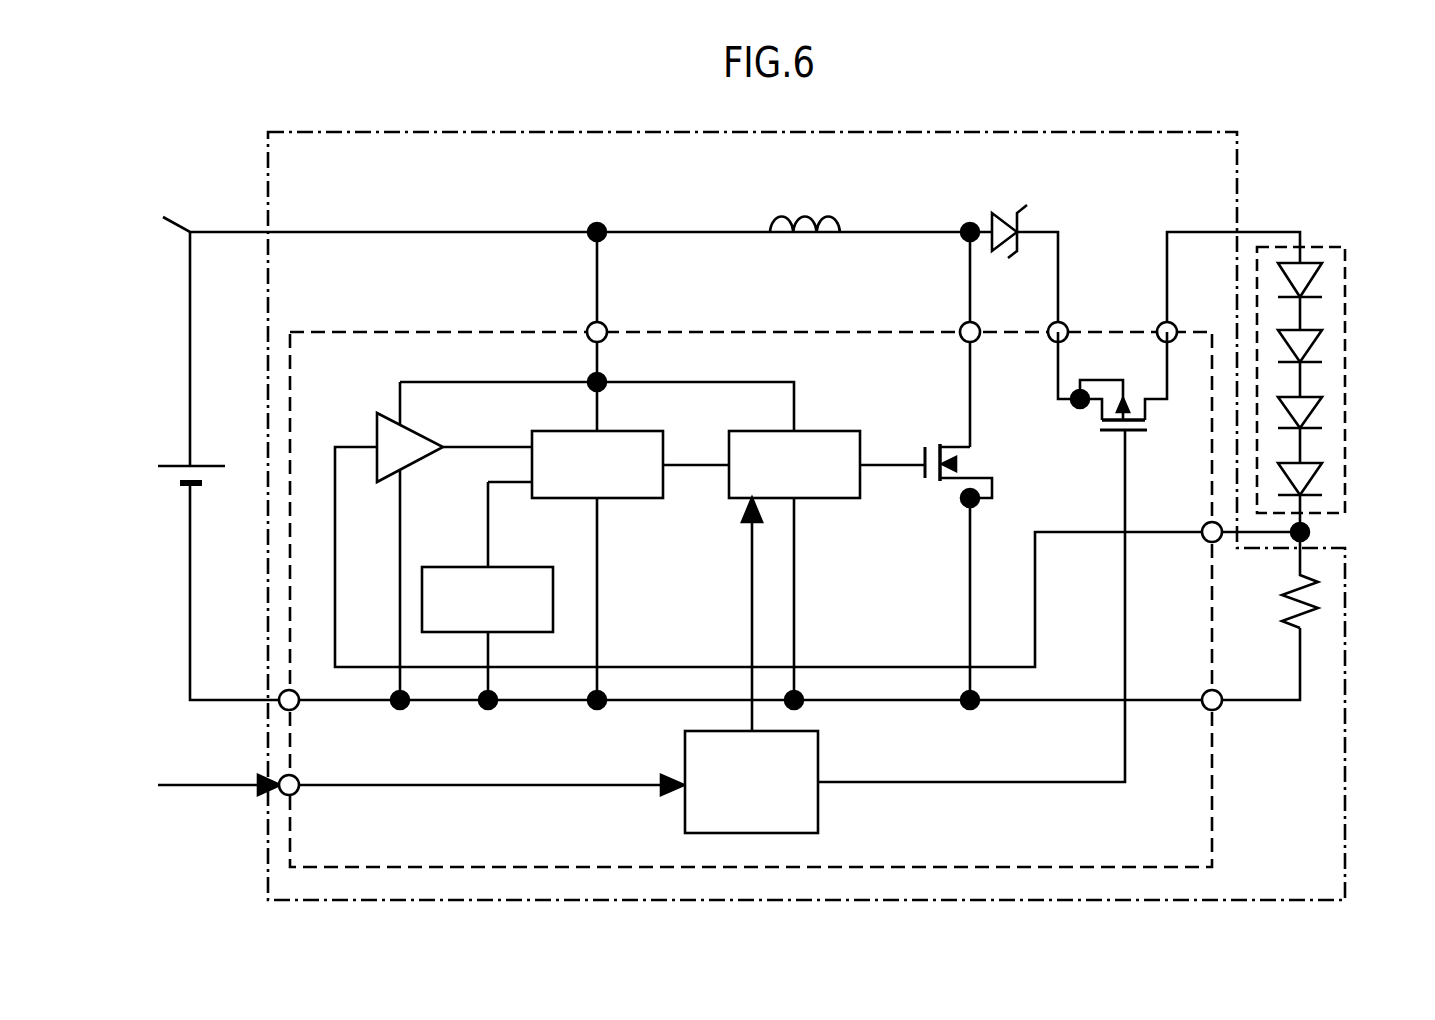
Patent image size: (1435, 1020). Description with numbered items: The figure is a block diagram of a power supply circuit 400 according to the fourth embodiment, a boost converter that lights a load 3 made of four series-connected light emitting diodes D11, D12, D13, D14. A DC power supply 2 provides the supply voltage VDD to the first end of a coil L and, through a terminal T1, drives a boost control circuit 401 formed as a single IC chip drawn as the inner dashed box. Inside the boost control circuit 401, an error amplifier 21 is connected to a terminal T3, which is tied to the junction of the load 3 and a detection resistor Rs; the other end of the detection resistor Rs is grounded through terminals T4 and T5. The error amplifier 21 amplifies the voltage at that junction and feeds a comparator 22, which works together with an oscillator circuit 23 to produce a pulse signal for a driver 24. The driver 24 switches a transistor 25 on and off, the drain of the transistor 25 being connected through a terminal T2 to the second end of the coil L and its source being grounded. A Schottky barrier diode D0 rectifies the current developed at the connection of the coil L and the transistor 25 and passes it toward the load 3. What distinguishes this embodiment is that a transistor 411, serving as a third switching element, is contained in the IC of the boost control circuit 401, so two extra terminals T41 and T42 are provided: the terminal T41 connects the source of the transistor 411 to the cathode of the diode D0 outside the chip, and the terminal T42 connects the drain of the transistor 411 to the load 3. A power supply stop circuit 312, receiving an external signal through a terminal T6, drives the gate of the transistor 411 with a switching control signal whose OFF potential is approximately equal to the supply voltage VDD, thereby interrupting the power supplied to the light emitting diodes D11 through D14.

The power supply circuit 400 is at (281, 128).
The boost control circuit 401 is at (387, 328).
The DC power supply 2 is at (178, 465).
The load 3 is at (1322, 247).
The error amplifier 21 is at (378, 418).
The comparator 22 is at (550, 430).
The oscillator circuit 23 is at (466, 565).
The driver 24 is at (769, 430).
The transistor 25 is at (955, 445).
The power supply stop circuit 312 is at (820, 761).
The transistor 411 is at (1102, 432).
The coil L is at (805, 199).
The Schottky barrier diode D0 is at (1028, 215).
The light emitting diode D11 is at (1312, 285).
The light emitting diode D12 is at (1312, 351).
The light emitting diode D13 is at (1312, 418).
The light emitting diode D14 is at (1312, 484).
The detection resistor Rs is at (1318, 606).
The supply voltage VDD is at (591, 268).
The terminal T1 is at (579, 461).
The terminal T2 is at (952, 335).
The terminal T3 is at (822, 557).
The terminal T4 is at (794, 684).
The terminal T5 is at (260, 689).
The terminal T6 is at (421, 775).
The terminal T41 is at (1031, 321).
The terminal T42 is at (1207, 287).